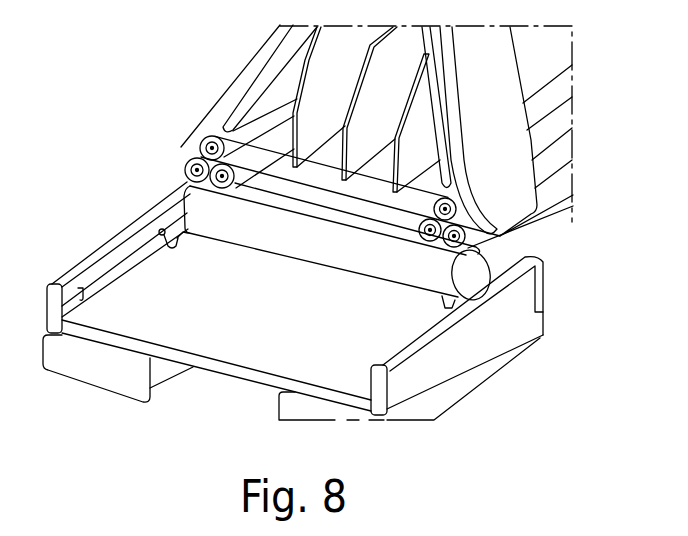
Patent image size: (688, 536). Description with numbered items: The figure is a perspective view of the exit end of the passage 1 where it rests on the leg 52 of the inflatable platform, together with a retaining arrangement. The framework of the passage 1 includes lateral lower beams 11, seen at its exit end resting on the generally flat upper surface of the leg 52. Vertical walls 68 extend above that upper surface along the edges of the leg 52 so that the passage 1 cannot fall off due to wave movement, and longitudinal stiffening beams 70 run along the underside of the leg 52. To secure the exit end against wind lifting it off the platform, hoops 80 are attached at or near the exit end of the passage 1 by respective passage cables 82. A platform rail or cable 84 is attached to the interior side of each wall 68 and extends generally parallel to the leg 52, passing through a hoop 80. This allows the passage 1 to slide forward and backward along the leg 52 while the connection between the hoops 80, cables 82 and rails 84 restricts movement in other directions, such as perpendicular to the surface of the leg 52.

The passage 1 is at (247, 62).
The lateral lower beams 11 is at (183, 170).
The vertical walls 68 is at (123, 240).
The passage cables 82 is at (183, 241).
The hoops 80 is at (166, 247).
The platform rail or cable 84 is at (105, 275).
The leg 52 is at (294, 326).
The longitudinal stiffening beams 70 is at (291, 407).